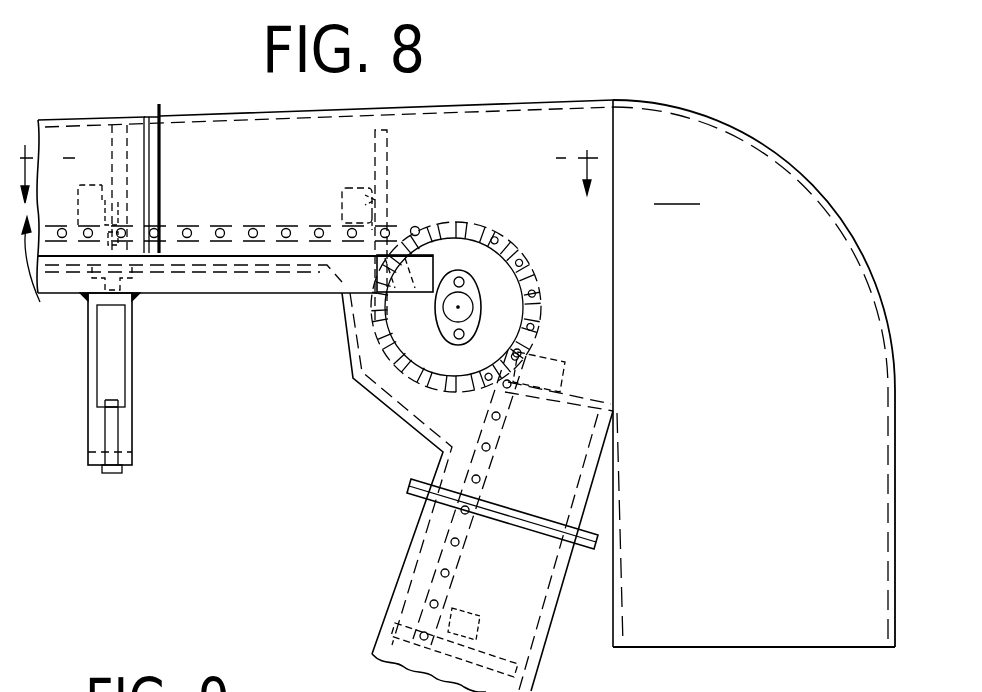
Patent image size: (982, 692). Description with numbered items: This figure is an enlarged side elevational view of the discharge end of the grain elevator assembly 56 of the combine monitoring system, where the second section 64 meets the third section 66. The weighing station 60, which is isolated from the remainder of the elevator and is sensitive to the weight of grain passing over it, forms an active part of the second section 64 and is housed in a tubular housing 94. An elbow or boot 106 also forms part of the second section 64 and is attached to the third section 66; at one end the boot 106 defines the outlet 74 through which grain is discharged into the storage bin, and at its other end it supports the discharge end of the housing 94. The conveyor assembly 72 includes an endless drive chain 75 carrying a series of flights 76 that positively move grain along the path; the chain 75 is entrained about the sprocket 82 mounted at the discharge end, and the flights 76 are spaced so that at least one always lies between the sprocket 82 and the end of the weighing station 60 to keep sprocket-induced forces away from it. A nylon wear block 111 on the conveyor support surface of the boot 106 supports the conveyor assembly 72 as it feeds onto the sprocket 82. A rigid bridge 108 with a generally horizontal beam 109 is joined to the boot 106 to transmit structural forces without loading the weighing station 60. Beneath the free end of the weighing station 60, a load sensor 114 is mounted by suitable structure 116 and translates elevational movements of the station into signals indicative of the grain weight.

The second section 64 is at (78, 128).
The tubular housing 94 is at (92, 172).
The endless drive chain 75 is at (238, 222).
The flights 76 is at (378, 172).
The sprocket 82 is at (528, 256).
The elbow or boot 106 is at (754, 373).
The outlet 74 is at (723, 628).
The horizontal beam 109 is at (238, 285).
The nylon wear block 111 is at (178, 290).
The rigid bridge 108 is at (296, 299).
The weighing station 60 is at (41, 271).
The mounting structure 116 is at (125, 445).
The load sensor 114 is at (105, 355).
The elevator assembly 56 is at (392, 434).
The conveyor assembly 72 is at (503, 489).
The third section 66 is at (525, 652).